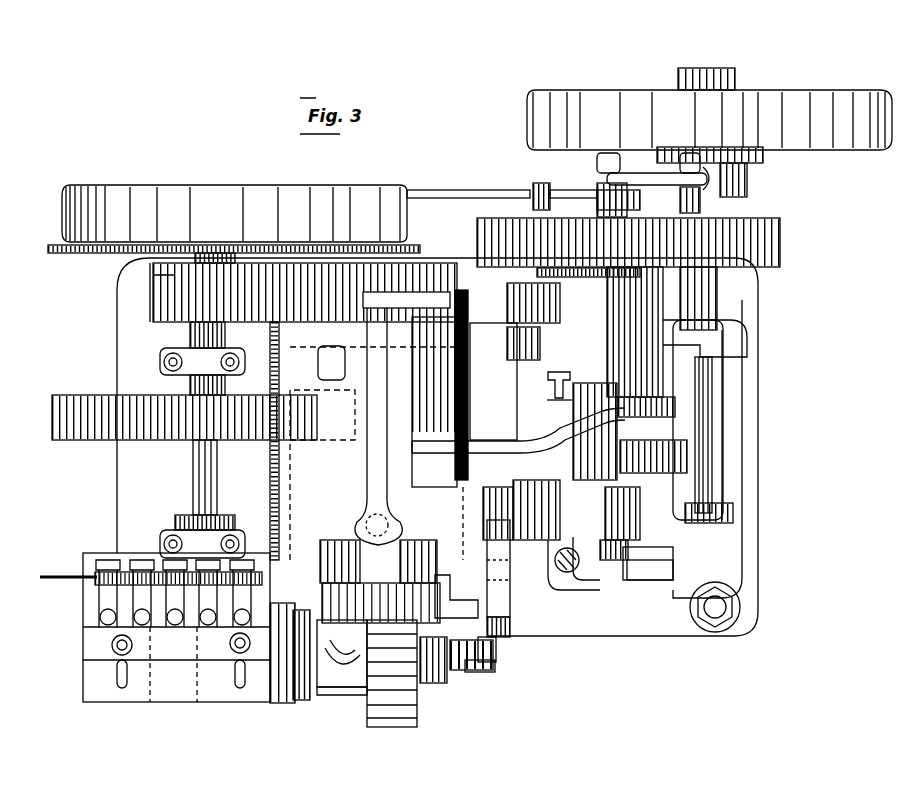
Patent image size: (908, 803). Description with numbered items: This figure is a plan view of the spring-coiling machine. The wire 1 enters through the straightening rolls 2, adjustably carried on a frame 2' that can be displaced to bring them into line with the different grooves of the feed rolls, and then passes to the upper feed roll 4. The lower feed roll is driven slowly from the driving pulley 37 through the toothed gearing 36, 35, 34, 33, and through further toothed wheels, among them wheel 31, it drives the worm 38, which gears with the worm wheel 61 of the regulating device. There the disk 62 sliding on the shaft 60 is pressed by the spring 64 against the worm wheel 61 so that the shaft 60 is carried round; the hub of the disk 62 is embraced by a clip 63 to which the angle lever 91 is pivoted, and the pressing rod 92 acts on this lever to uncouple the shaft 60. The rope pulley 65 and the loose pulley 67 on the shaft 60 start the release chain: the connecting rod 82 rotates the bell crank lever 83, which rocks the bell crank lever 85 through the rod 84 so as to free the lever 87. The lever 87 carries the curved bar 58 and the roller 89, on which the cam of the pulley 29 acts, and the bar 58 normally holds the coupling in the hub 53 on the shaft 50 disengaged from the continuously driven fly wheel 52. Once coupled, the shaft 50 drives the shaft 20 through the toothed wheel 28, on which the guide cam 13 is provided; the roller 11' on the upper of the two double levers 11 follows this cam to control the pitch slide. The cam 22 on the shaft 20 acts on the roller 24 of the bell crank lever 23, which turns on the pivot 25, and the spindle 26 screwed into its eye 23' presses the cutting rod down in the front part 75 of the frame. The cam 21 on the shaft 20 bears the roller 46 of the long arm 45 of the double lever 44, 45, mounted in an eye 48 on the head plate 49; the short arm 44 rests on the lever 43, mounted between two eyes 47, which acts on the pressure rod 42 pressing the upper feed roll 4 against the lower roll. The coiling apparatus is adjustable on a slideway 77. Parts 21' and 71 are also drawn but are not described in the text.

The wire 1 is at (63, 573).
The straightening rolls 2 is at (162, 577).
The frame 2' is at (176, 642).
The upper feed roll 4 is at (433, 600).
The double levers 11 is at (547, 386).
The roller 11' is at (508, 343).
The guide cam 13 is at (562, 302).
The shaft 20 is at (747, 345).
The cam 21 is at (703, 455).
The bar 21' is at (513, 568).
The cam 22 is at (723, 480).
The bell crank lever 23 is at (521, 501).
The eye 23' is at (572, 573).
The roller 24 is at (620, 548).
The pivot 25 is at (483, 507).
The spindle 26 is at (605, 568).
The toothed wheel 28 is at (764, 262).
The pulley 29 is at (549, 200).
The toothed wheel 31 is at (340, 683).
The toothed gearing 33 is at (320, 313).
The toothed gearing 34 is at (153, 305).
The toothed gearing 35 is at (112, 432).
The toothed gearing 36 is at (177, 447).
The driving pulley 37 is at (236, 190).
The worm 38 is at (362, 678).
The pressure rod 42 is at (366, 520).
The lever 43 is at (372, 457).
The short arm 44 is at (432, 262).
The long arm 45 is at (483, 443).
The roller 46 is at (578, 440).
The eyes 47 is at (340, 541).
The eye 48 is at (450, 377).
The head plate 49 is at (322, 453).
The shaft 50 is at (710, 66).
The fly wheel 52 is at (608, 96).
The hub 53 is at (750, 165).
The curved bar 58 is at (750, 185).
The shaft 60 is at (486, 670).
The worm wheel 61 is at (378, 727).
The disk 62 is at (407, 717).
The clip 63 is at (443, 683).
The spring 64 is at (495, 647).
The rope pulley 65 is at (293, 702).
The loose pulley 67 is at (273, 700).
The bracket 71 is at (325, 705).
The front part of frame 75 is at (630, 578).
The slideway 77 is at (675, 593).
The connecting rod 82 is at (273, 473).
The bell crank lever 83 is at (335, 210).
The rod 84 is at (483, 194).
The bell crank lever 85 is at (565, 193).
The lever 87 is at (632, 176).
The roller 89 is at (715, 200).
The angle lever 91 is at (494, 660).
The pressing rod 92 is at (511, 622).